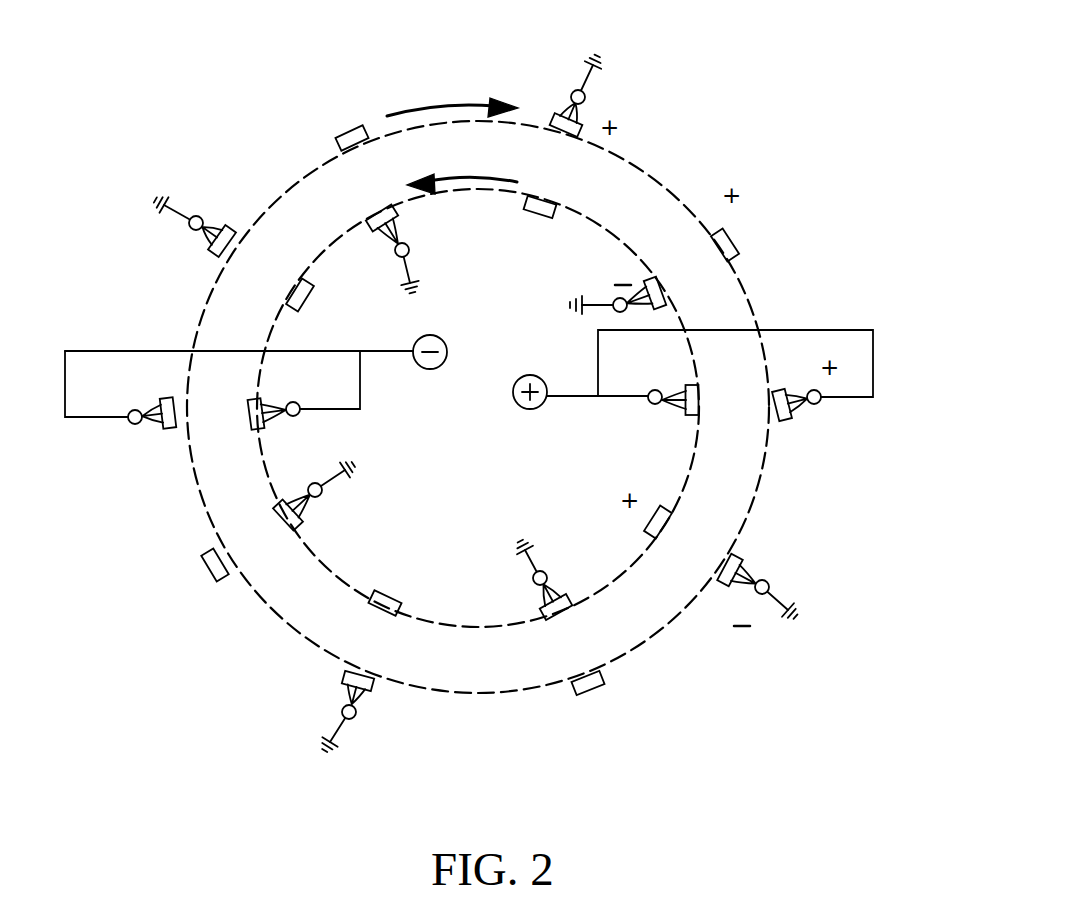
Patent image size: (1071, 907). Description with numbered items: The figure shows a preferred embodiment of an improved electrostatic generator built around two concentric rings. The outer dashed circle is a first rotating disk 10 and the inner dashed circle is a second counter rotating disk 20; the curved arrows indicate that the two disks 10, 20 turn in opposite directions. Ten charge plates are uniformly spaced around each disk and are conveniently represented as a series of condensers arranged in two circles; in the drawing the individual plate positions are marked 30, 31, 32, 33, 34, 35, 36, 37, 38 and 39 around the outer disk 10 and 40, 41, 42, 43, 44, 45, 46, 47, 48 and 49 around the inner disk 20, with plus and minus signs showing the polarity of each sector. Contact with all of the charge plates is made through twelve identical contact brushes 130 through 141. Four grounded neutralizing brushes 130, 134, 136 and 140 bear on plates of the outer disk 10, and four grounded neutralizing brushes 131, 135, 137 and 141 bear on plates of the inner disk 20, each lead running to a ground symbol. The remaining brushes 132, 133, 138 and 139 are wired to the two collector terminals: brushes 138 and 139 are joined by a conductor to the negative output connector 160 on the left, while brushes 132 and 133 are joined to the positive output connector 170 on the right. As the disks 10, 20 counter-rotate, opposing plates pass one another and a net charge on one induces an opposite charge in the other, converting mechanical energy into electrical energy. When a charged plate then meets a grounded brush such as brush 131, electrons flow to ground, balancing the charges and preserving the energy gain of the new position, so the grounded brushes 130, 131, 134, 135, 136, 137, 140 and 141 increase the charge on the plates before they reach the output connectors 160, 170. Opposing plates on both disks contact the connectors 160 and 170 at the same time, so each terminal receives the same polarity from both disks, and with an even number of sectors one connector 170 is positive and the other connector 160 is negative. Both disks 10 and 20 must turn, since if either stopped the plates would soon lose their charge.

The first rotating disk 10 is at (659, 186).
The second counter rotating disk 20 is at (636, 248).
The brush 30 is at (548, 118).
The segment 31 is at (738, 238).
The brush 32 is at (792, 415).
The brush 33 is at (740, 560).
The segment 34 is at (601, 689).
The brush 35 is at (372, 688).
The segment 36 is at (204, 563).
The brush 37 is at (160, 405).
The brush 38 is at (209, 247).
The segment 39 is at (346, 128).
The segment 40 is at (536, 216).
The brush 41 is at (672, 292).
The brush 42 is at (700, 396).
The segment 43 is at (656, 508).
The brush 44 is at (548, 606).
The segment 45 is at (388, 592).
The brush 46 is at (278, 514).
The brush 47 is at (262, 402).
The segment 48 is at (312, 300).
The brush 49 is at (376, 212).
The grounded neutralizing brush 130 is at (590, 97).
The grounded neutralizing brush 131 is at (614, 298).
The contact brush 132 is at (822, 398).
The contact brush 133 is at (650, 404).
The grounded neutralizing brush 134 is at (770, 585).
The grounded neutralizing brush 135 is at (549, 576).
The grounded neutralizing brush 136 is at (356, 719).
The grounded neutralizing brush 137 is at (323, 492).
The contact brush 138 is at (302, 412).
The contact brush 139 is at (132, 424).
The grounded neutralizing brush 140 is at (200, 216).
The grounded neutralizing brush 141 is at (410, 246).
The output connector 160 is at (447, 351).
The positive output connector 170 is at (523, 406).